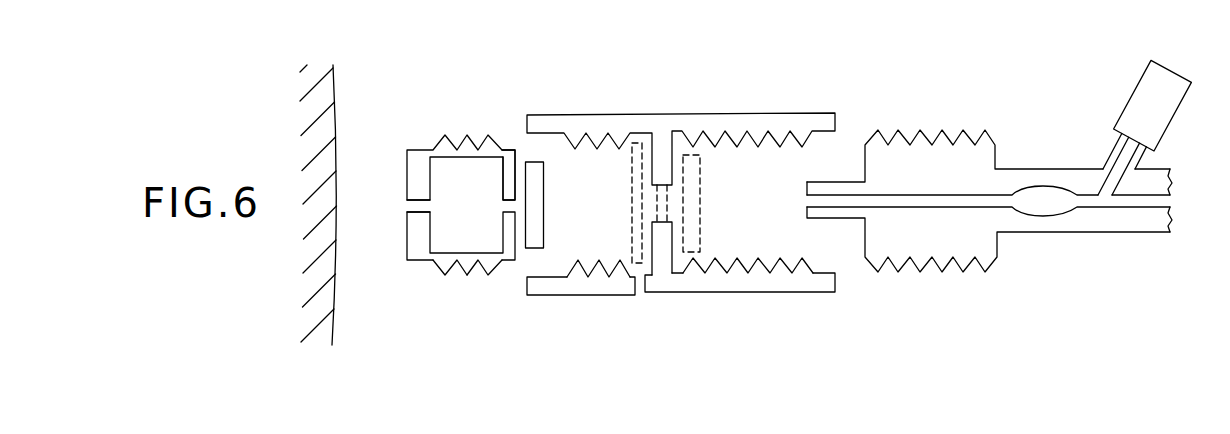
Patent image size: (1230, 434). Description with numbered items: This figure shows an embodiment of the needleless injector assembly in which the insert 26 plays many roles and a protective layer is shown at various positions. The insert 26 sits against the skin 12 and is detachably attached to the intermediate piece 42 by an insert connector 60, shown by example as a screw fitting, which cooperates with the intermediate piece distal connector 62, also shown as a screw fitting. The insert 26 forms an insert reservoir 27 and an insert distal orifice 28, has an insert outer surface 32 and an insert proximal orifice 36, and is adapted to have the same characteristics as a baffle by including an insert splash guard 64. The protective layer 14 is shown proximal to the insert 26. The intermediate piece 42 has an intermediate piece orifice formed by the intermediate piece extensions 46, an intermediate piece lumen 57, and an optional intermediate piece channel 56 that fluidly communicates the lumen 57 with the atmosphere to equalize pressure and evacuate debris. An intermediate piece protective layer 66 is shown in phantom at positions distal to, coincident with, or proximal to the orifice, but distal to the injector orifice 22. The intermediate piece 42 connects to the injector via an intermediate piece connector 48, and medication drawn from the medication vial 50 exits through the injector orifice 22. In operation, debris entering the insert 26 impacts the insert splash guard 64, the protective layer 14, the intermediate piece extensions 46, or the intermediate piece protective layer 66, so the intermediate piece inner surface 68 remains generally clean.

The skin 12 is at (335, 110).
The protective layer 14 is at (538, 252).
The injector orifice 22 is at (807, 200).
The insert 26 is at (413, 160).
The insert reservoir 27 is at (443, 233).
The insert distal orifice 28 is at (410, 204).
The insert outer surface 32 is at (472, 275).
The insert proximal orifice 36 is at (507, 203).
The intermediate piece 42 is at (827, 282).
The intermediate piece extension 46 is at (663, 243).
The intermediate piece connector 48 is at (782, 268).
The medication vial 50 is at (1126, 104).
The intermediate piece channel 56 is at (638, 295).
The intermediate piece lumen 57 is at (582, 232).
The insert connector 60 is at (445, 275).
The intermediate piece distal connector 62 is at (598, 273).
The insert splash guard 64 is at (510, 177).
The intermediate piece protective layer 66 is at (635, 147).
The intermediate piece inner surface 68 is at (560, 277).